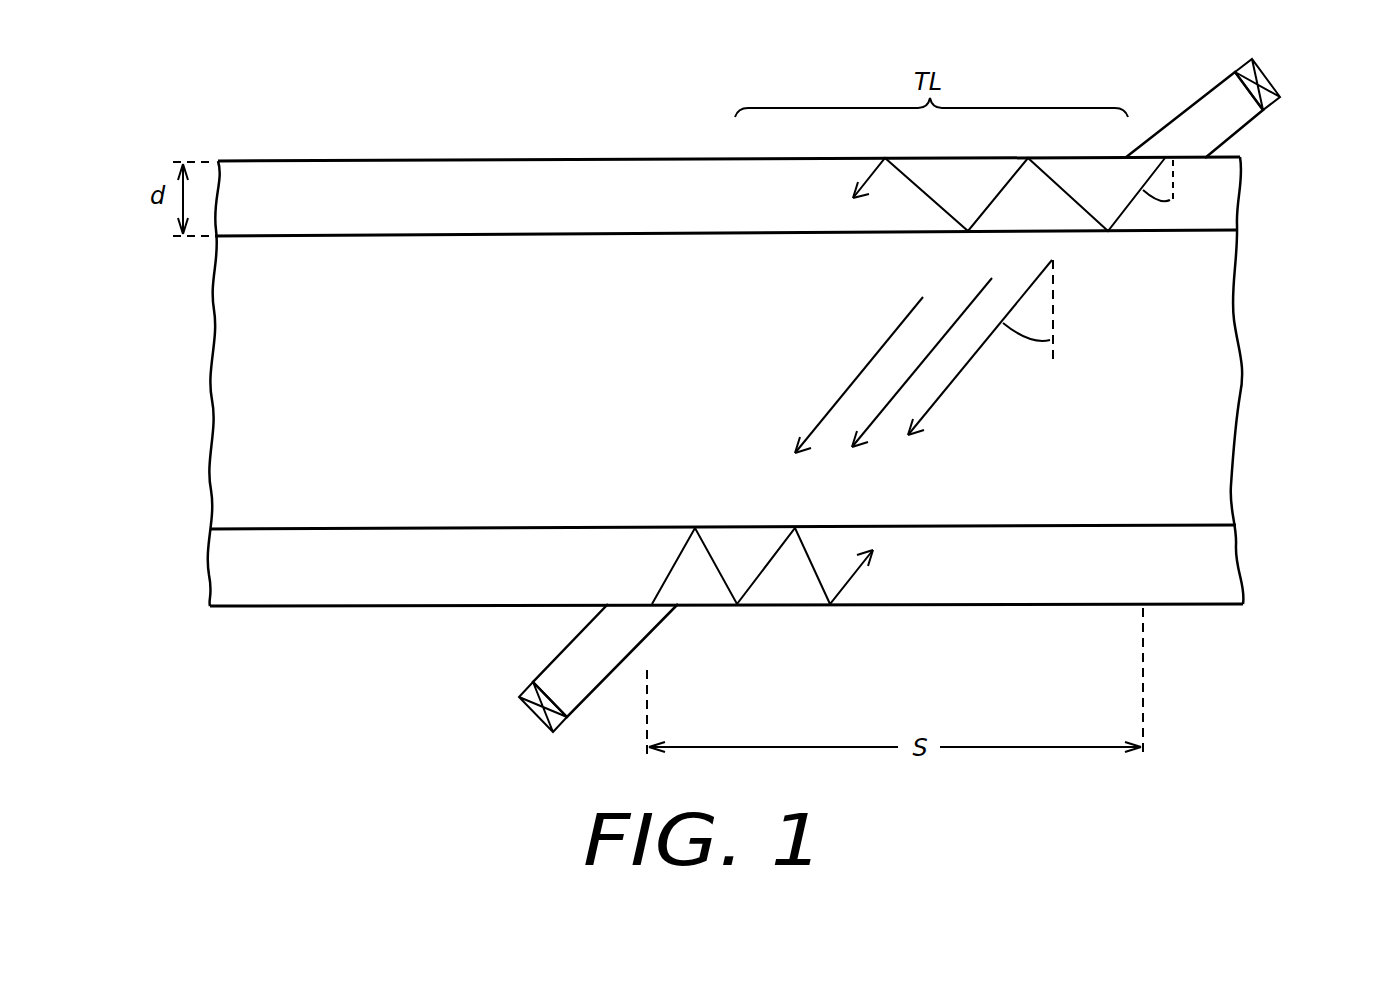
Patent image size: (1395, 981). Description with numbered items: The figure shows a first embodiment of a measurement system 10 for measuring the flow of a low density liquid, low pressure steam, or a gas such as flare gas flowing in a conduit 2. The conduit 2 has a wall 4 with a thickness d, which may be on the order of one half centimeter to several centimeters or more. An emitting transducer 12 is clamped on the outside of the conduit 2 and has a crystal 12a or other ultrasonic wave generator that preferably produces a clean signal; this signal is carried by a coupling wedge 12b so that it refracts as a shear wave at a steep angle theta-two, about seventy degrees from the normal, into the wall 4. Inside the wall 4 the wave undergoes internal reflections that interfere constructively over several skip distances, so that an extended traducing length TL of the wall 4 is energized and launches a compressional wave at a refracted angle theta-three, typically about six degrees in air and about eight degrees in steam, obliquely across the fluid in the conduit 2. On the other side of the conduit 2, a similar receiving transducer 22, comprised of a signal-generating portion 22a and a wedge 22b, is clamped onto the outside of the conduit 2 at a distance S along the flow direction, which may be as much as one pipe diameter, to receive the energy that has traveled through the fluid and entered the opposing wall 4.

The conduit 2 is at (553, 95).
The wall 4 is at (395, 173).
The measurement system 10 is at (720, 83).
The emitting transducer 12 is at (1241, 95).
The crystal 12a is at (1276, 92).
The coupling wedge 12b is at (1178, 146).
The receiving transducer 22 is at (592, 691).
The signal-generating portion 22a is at (551, 724).
The wedge 22b is at (588, 649).